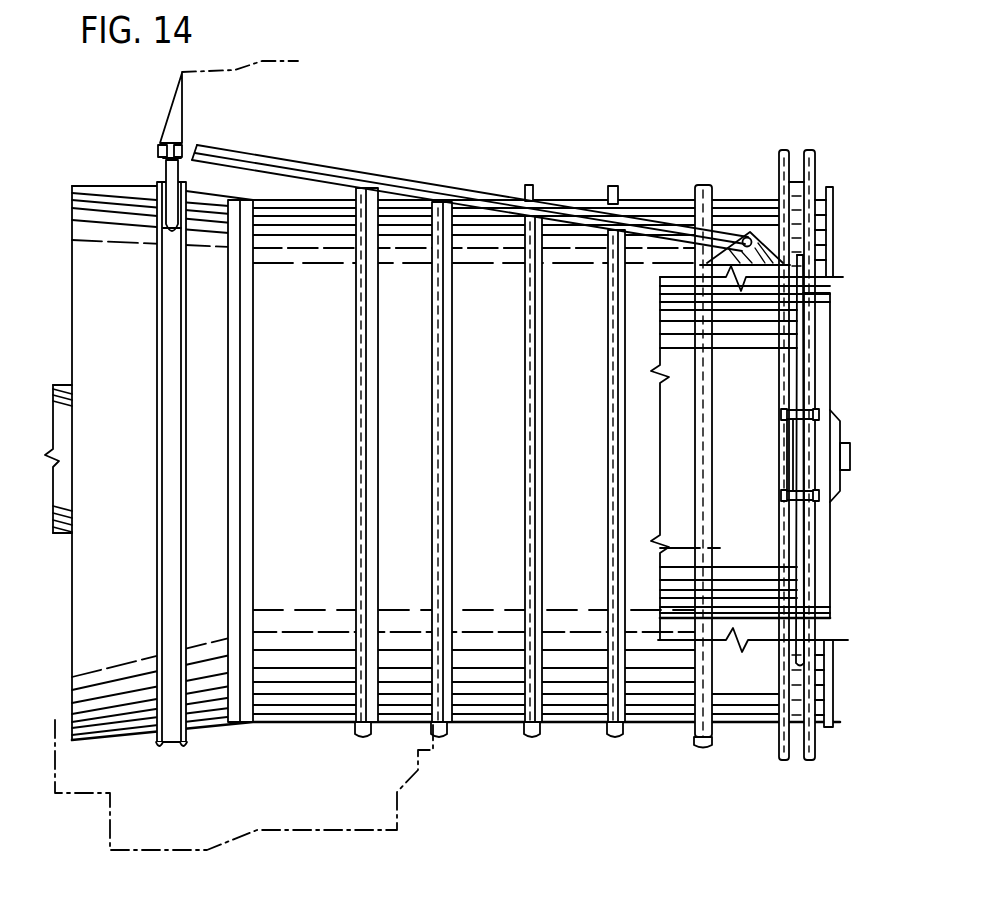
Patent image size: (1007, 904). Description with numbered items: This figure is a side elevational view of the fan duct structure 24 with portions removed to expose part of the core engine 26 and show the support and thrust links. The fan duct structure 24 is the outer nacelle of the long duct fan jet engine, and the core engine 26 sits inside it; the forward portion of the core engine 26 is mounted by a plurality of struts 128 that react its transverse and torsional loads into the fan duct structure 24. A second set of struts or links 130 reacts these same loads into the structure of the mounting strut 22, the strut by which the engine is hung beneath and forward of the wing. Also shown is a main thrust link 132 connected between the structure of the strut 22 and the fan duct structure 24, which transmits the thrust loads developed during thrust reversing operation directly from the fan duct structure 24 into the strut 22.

The mounting strut 22 is at (264, 58).
The fan duct structure 24 is at (664, 210).
The core engine 26 is at (739, 385).
The struts 128 is at (797, 378).
The links 130 is at (166, 176).
The main thrust links 132 is at (385, 180).